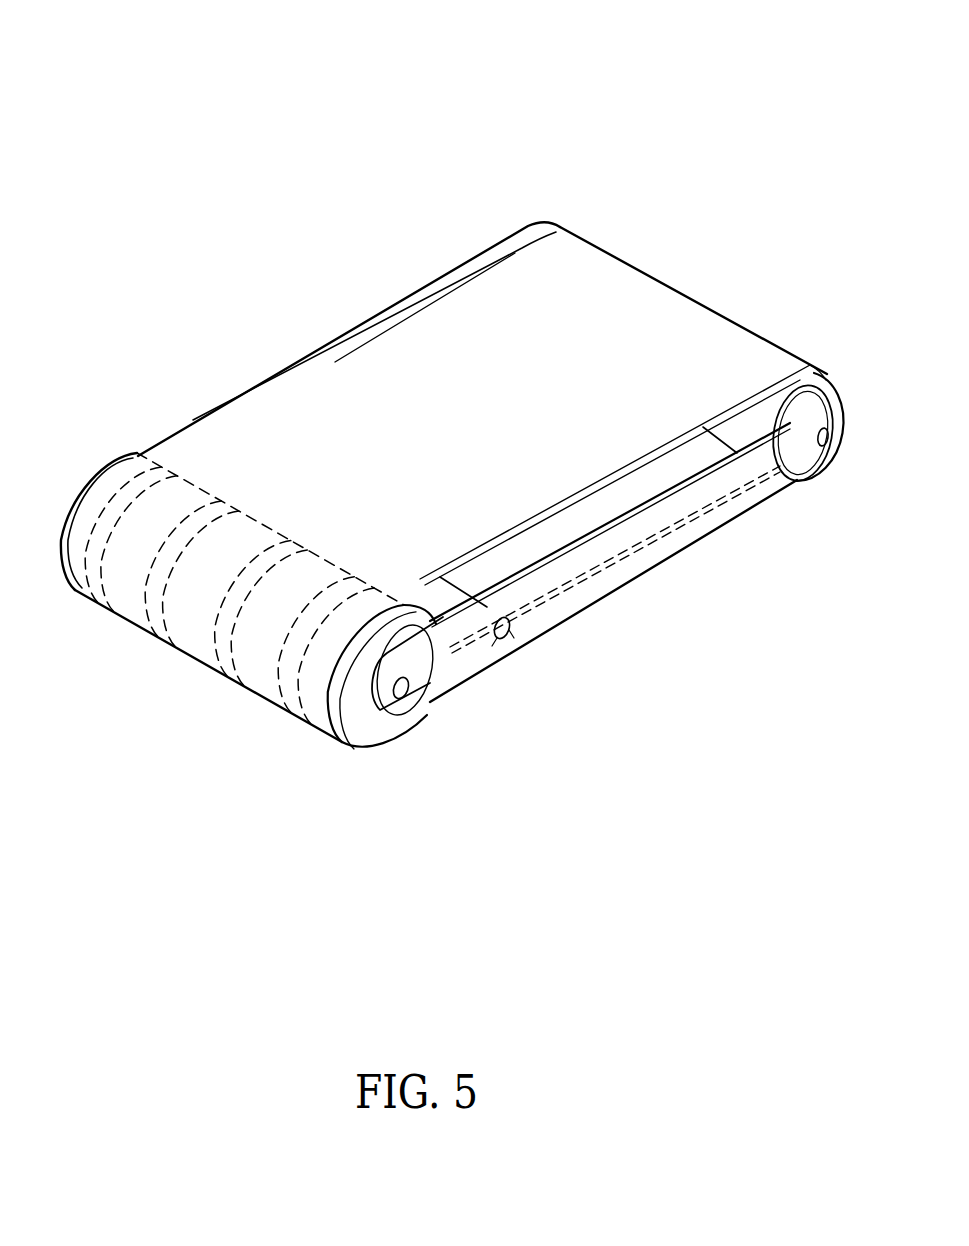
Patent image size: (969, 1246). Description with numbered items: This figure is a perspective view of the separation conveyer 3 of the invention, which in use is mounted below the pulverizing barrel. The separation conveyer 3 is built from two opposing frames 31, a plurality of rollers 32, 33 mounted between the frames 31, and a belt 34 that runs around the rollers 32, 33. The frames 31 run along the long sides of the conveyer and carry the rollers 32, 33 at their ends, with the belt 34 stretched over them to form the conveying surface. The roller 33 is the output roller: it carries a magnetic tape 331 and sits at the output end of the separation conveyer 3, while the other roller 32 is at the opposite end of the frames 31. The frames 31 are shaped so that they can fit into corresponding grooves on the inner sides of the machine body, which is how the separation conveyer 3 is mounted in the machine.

The separation conveyer 3 is at (657, 257).
The frames 31 is at (388, 297).
The roller 32 is at (824, 385).
The output roller 33 is at (377, 750).
The magnetic tape 331 is at (213, 633).
The belt 34 is at (562, 292).